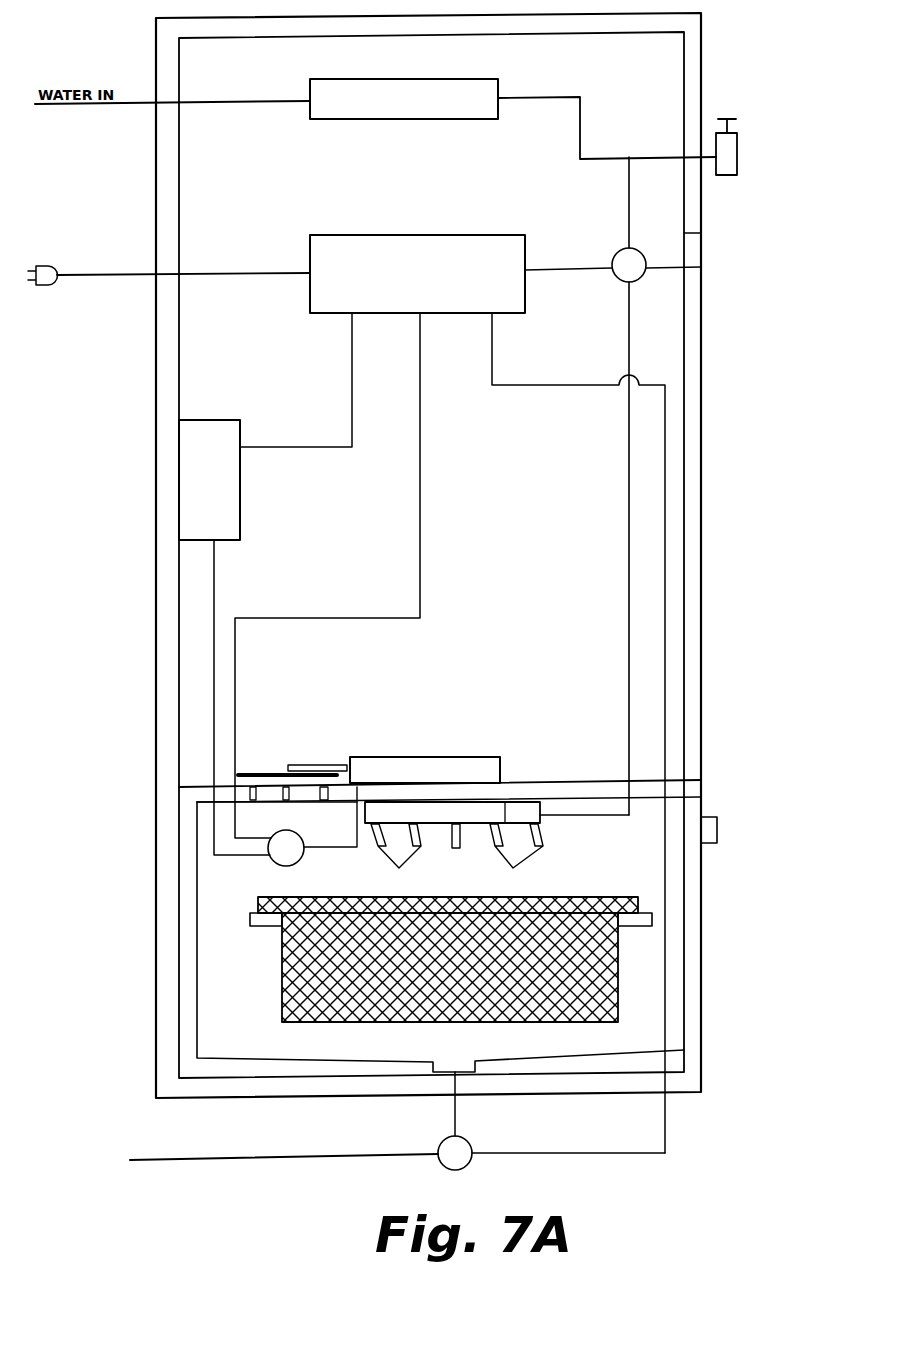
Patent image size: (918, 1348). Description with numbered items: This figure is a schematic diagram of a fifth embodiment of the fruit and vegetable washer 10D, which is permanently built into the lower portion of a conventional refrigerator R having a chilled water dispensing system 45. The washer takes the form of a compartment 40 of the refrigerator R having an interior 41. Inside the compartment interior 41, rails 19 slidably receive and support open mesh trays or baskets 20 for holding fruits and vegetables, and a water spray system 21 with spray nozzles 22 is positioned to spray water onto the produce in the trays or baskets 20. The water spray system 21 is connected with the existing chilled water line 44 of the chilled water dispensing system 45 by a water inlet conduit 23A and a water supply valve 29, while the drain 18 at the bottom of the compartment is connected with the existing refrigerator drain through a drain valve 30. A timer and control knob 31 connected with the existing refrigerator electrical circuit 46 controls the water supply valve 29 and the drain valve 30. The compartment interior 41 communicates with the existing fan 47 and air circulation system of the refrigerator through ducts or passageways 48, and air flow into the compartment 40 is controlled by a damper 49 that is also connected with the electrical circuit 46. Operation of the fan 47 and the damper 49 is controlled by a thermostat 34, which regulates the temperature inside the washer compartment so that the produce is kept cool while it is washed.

The fruit and vegetable washer 10D is at (706, 865).
The refrigerator R is at (703, 340).
The chilled water dispensing system 45 is at (478, 81).
The chilled water line 44 is at (553, 100).
The refrigerator electrical circuit 46 is at (420, 237).
The water supply valve 29 is at (701, 270).
The water inlet conduit 23A is at (628, 539).
The fan 47 is at (240, 516).
The compartment 40 is at (578, 778).
The compartment interior 41 is at (623, 879).
The damper 49 is at (380, 757).
The ducts or passageways 48 is at (290, 797).
The thermostat 34 is at (302, 862).
The water spray system 21 is at (543, 818).
The spray nozzles 22 is at (457, 861).
The timer and control knob 31 is at (715, 815).
The trays or baskets 20 is at (288, 980).
The rails 19 is at (634, 927).
The drain 18 is at (470, 1073).
The drain valve 30 is at (470, 1164).